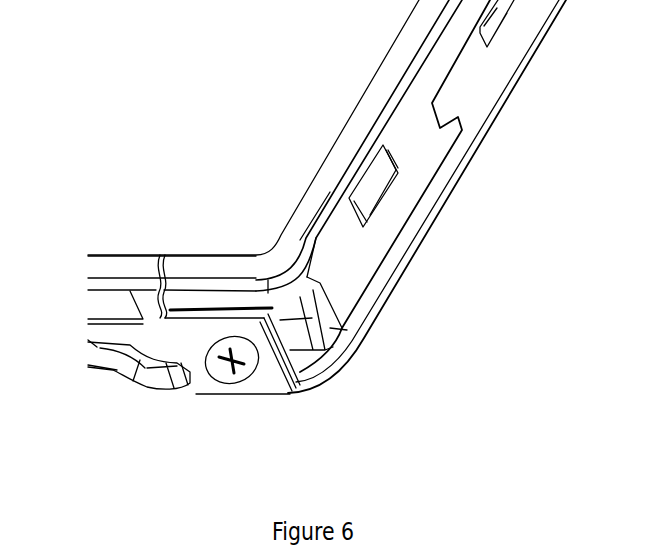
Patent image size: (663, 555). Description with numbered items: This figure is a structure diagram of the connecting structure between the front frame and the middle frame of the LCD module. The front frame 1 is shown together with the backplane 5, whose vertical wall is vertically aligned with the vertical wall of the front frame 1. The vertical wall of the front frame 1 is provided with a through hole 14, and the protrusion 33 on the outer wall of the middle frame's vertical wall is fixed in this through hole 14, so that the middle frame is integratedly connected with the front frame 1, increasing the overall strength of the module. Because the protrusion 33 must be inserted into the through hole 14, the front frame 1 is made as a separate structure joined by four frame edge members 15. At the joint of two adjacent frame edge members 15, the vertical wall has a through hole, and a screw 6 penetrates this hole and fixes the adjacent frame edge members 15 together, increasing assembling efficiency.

The front frame 1 is at (368, 97).
The backplane 5 is at (490, 73).
The screw 6 is at (218, 368).
The through hole 14 is at (363, 172).
The frame edge members 15 is at (117, 263).
The protrusion 33 is at (373, 183).